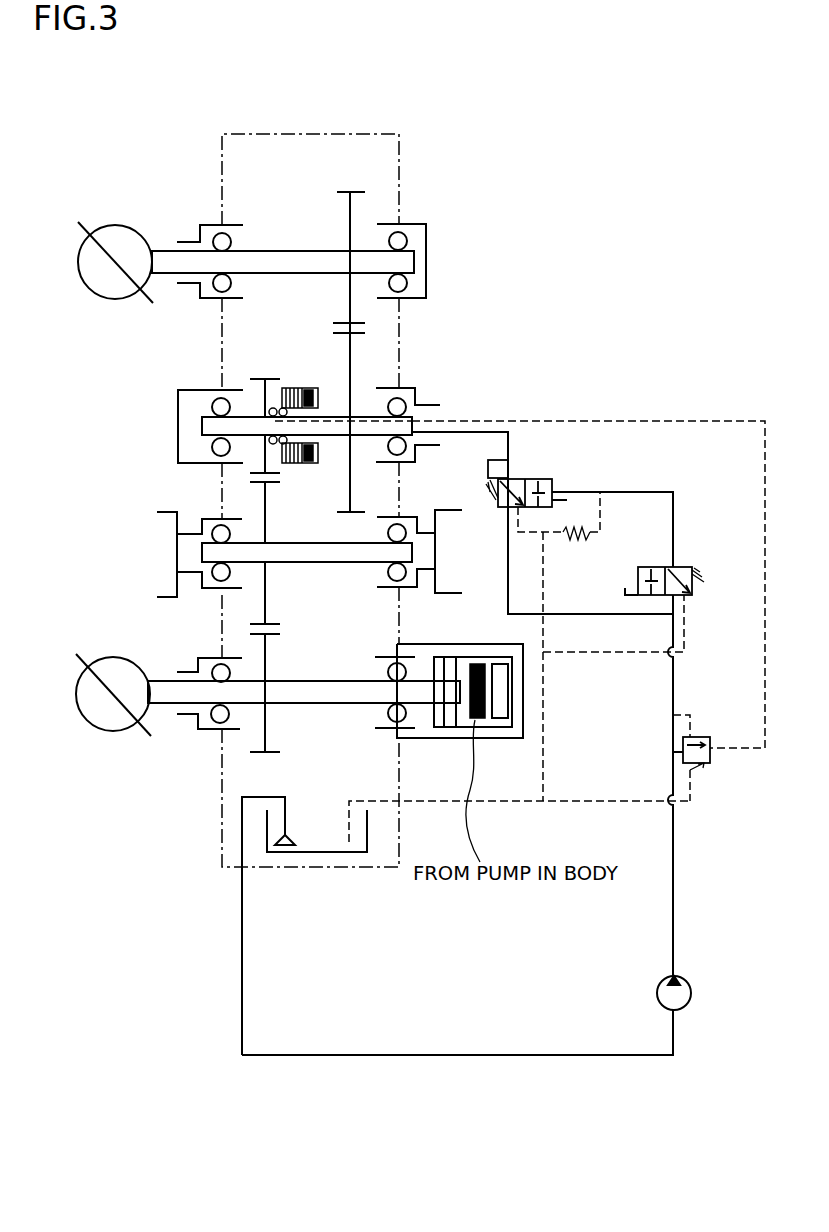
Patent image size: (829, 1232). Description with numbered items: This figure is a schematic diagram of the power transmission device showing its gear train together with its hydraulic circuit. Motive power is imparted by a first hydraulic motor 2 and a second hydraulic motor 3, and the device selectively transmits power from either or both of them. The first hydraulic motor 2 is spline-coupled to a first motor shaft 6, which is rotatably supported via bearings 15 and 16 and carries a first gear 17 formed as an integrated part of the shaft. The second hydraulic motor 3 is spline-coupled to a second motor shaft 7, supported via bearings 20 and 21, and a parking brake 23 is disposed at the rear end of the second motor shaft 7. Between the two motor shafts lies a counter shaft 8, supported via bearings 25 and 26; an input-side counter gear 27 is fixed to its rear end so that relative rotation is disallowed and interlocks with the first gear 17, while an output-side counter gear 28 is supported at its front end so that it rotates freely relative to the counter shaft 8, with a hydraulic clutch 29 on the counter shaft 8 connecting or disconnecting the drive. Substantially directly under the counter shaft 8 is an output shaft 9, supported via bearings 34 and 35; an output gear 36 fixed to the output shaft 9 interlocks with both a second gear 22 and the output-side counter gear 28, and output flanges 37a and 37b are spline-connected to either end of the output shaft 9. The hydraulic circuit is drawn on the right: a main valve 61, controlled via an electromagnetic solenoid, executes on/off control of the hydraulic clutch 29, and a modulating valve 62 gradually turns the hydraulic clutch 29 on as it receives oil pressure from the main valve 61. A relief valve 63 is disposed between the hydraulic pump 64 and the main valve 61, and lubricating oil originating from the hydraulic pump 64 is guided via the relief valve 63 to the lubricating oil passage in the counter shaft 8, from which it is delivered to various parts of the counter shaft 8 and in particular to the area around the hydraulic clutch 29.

The first hydraulic motor 2 is at (112, 224).
The second hydraulic motor 3 is at (112, 656).
The first motor shaft 6 is at (289, 251).
The second motor shaft 7 is at (323, 704).
The counter shaft 8 is at (363, 417).
The output shaft 9 is at (327, 562).
The bearing 15 is at (220, 232).
The bearing 16 is at (400, 227).
The first gear 17 is at (358, 190).
The bearing 20 is at (215, 722).
The bearing 21 is at (407, 731).
The second gear 22 is at (268, 755).
The parking brake 23 is at (488, 733).
The bearing 25 is at (221, 405).
The bearing 26 is at (405, 392).
The input-side counter gear 27 is at (347, 360).
The output-side counter gear 28 is at (265, 379).
The hydraulic clutch 29 is at (300, 388).
The bearing 34 is at (221, 526).
The bearing 35 is at (398, 526).
The output gear 36 is at (267, 522).
The output flange 37a is at (165, 519).
The output flange 37b is at (460, 624).
The main valve 61 is at (685, 566).
The modulating valve 62 is at (548, 479).
The relief valve 63 is at (707, 737).
The hydraulic pump 64 is at (692, 990).